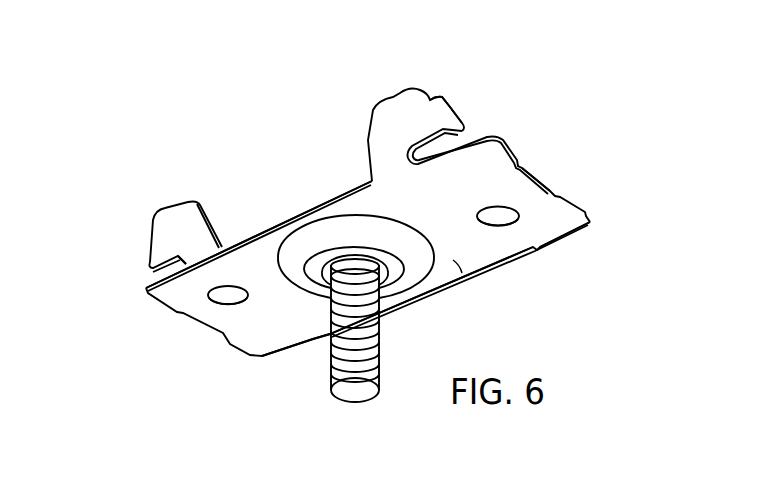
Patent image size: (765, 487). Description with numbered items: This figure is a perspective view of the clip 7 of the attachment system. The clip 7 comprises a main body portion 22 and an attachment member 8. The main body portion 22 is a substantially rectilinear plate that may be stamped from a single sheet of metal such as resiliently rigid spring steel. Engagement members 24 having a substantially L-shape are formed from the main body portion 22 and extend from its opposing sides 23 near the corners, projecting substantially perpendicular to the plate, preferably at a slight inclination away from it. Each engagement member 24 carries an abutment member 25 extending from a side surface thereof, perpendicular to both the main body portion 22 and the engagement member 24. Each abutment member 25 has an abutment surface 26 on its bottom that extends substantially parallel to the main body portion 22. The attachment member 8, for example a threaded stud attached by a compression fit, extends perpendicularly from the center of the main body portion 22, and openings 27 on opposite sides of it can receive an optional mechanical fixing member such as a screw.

The clip 7 is at (235, 116).
The attachment member 8 is at (327, 367).
The main body portion 22 is at (487, 166).
The opposing sides 23 is at (317, 207).
The engagement members 24 is at (400, 105).
The abutment member 25 is at (453, 110).
The abutment surface 26 is at (462, 130).
The openings 27 is at (223, 297).